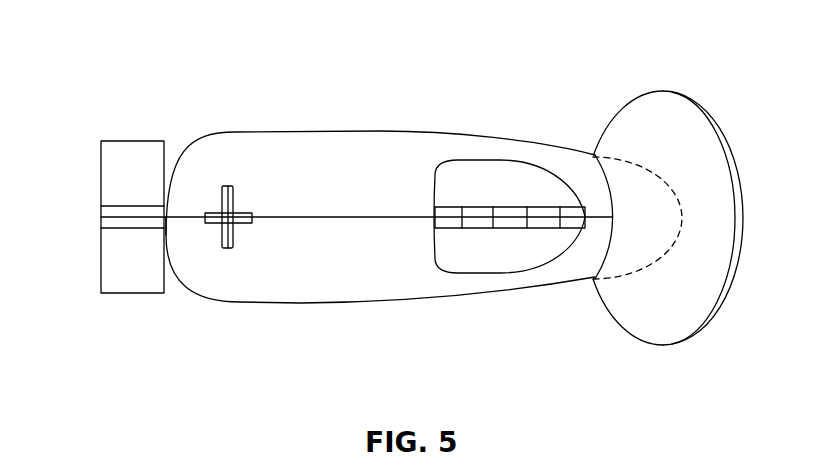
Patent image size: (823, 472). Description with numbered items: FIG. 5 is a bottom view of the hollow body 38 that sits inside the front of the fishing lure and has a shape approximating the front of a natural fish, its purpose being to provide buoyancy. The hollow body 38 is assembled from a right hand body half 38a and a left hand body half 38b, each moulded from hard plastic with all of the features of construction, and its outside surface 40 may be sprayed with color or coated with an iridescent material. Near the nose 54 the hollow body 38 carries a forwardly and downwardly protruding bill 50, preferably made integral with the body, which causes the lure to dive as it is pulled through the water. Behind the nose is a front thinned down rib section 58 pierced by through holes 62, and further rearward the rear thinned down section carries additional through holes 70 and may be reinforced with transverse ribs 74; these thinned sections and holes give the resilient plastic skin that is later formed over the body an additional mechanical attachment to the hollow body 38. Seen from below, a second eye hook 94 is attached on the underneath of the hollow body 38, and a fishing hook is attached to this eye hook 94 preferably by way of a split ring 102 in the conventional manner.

The hollow body 38 is at (117, 64).
The right hand body half 38a is at (383, 148).
The left hand body half 38b is at (383, 285).
The outside surface 40 is at (293, 303).
The bill 50 is at (693, 123).
The nose 54 is at (694, 238).
The front thinned down rib section 58 is at (517, 207).
The through holes 62 is at (527, 228).
The through holes 70 is at (155, 206).
The transverse ribs 74 is at (107, 168).
The second eye hook 94 is at (253, 220).
The split ring 102 is at (235, 197).